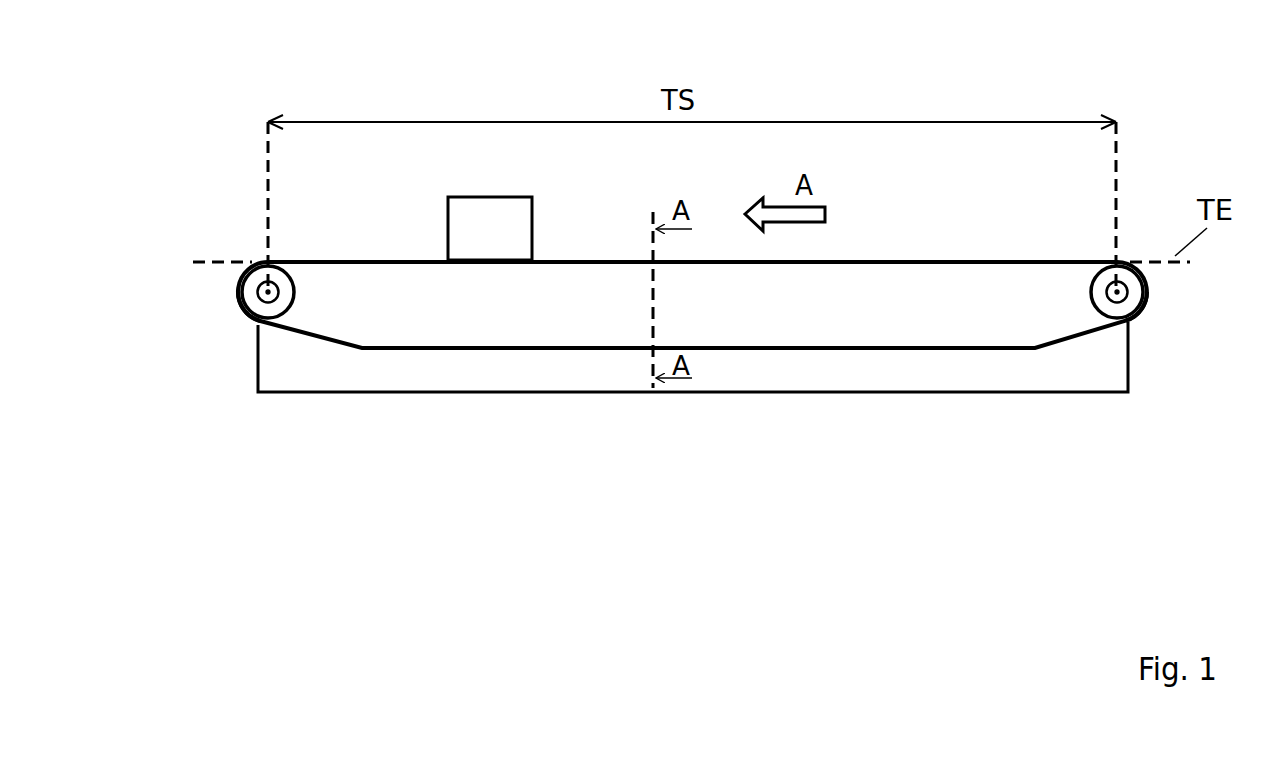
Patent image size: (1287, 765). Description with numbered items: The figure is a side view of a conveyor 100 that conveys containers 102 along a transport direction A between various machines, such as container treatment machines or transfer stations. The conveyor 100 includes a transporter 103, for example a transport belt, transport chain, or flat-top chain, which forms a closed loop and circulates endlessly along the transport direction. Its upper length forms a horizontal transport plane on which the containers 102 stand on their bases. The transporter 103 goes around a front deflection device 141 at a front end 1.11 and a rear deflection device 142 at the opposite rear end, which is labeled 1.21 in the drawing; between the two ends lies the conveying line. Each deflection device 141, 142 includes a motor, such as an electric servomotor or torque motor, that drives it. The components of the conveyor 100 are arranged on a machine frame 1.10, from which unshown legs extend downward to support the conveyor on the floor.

The conveyor 100 is at (222, 113).
The containers 102 is at (462, 195).
The transporter 103 is at (995, 250).
The front deflection device 141 is at (250, 292).
The rear deflection device 142 is at (1137, 297).
The machine frame 1.10 is at (285, 392).
The front end 1.11 is at (203, 325).
The second end region 1.21 is at (1165, 318).